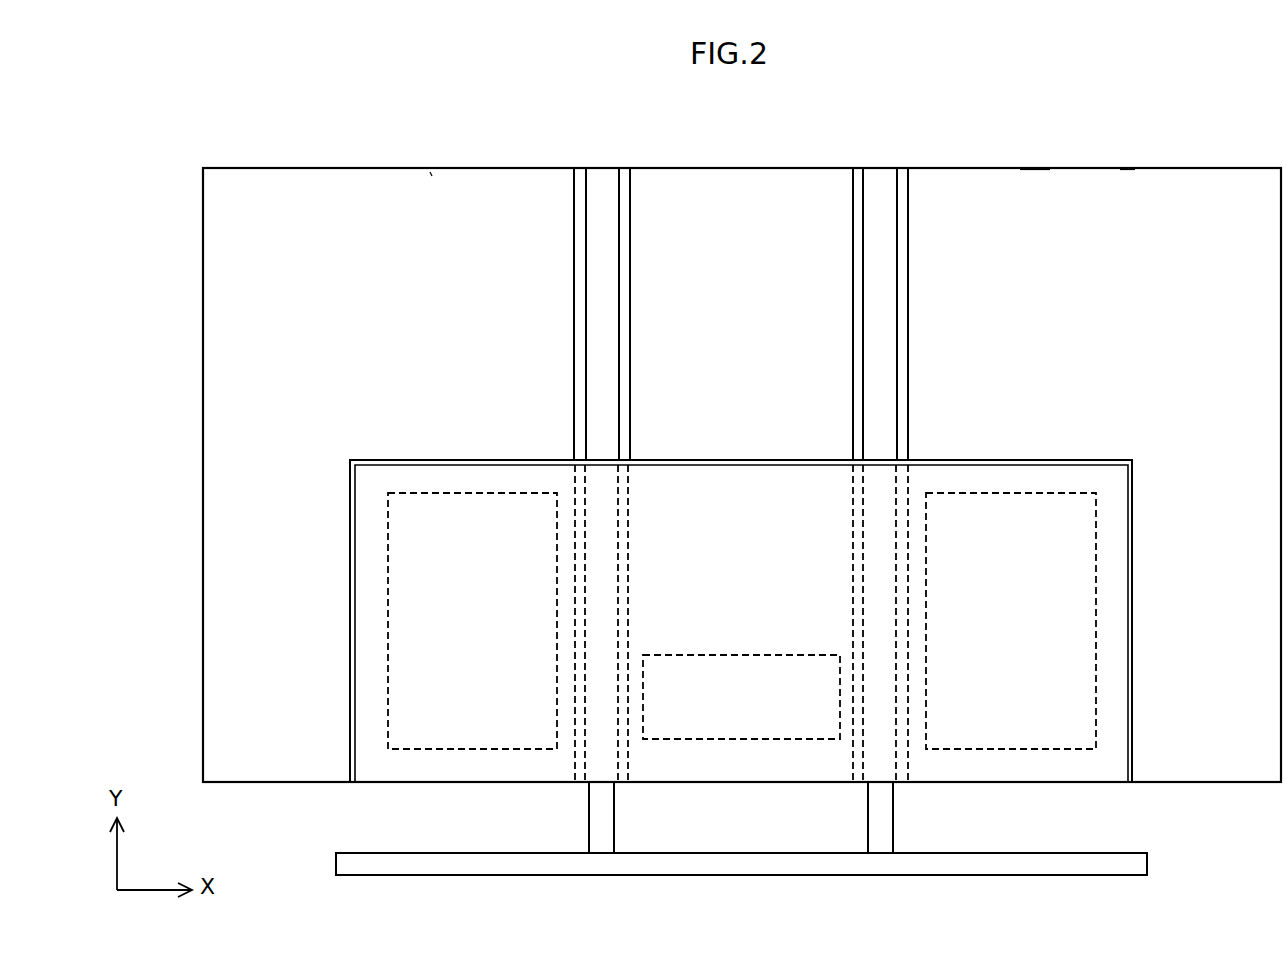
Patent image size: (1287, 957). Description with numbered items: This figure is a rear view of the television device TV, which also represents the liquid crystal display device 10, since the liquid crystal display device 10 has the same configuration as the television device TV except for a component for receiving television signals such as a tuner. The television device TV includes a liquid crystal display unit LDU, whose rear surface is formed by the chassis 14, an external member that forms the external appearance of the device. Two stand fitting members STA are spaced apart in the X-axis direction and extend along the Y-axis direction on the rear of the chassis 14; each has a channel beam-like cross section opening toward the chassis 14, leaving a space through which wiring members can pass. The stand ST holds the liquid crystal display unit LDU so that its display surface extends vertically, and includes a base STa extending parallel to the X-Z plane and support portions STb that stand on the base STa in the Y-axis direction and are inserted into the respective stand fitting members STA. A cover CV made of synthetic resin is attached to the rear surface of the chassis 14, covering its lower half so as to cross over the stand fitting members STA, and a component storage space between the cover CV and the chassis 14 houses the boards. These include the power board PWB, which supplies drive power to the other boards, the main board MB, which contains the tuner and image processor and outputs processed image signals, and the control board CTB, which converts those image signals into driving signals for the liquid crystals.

The liquid crystal display device 10 is at (1125, 160).
The chassis 14 is at (439, 194).
The television device TV is at (1036, 122).
The liquid crystal display unit LDU is at (289, 168).
The stand fitting member STA is at (601, 193).
The support portion STb is at (600, 818).
The base STa is at (1060, 860).
The stand ST is at (336, 862).
The cover CV is at (1113, 676).
The power board PWB is at (435, 749).
The control board CTB is at (745, 739).
The main board MB is at (1006, 749).